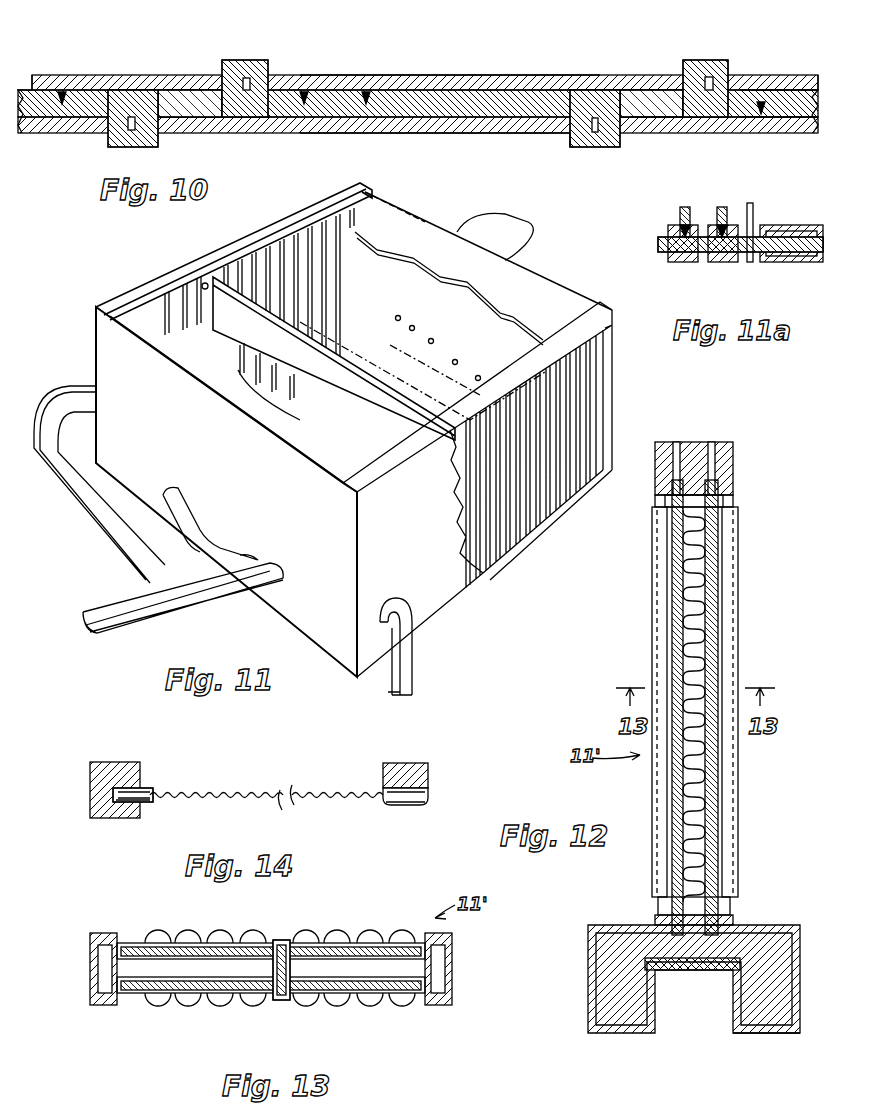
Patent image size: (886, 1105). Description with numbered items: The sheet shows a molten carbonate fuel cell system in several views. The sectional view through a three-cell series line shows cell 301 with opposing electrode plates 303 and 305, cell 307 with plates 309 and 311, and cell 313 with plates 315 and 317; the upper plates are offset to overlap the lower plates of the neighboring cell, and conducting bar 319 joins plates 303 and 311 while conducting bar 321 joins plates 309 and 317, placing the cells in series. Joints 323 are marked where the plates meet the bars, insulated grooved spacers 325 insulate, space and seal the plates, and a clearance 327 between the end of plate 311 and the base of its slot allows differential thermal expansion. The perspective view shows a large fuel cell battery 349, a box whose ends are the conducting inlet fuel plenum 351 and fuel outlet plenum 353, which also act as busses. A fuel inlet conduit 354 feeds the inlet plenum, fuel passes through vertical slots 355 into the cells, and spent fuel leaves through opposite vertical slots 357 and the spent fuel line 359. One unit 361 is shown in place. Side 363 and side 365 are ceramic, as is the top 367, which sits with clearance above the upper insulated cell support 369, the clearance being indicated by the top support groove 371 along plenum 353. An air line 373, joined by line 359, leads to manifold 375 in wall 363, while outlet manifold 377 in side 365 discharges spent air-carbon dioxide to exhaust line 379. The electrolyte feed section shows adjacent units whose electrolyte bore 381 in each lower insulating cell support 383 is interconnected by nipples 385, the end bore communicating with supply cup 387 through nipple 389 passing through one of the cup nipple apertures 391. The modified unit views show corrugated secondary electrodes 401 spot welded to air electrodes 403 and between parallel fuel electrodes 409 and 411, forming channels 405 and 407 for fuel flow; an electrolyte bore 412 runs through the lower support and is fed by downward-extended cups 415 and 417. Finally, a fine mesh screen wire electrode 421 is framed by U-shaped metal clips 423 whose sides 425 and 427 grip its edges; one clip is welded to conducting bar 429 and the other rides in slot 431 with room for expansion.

In FIG. 10, the cell 301 is at (66, 80).
In FIG. 10, the electrode plate 303 is at (108, 82).
In FIG. 10, the electrode plate 305 is at (48, 134).
In FIG. 10, the cell 307 is at (370, 96).
In FIG. 10, the electrode plate 309 is at (444, 76).
In FIG. 10, the electrode plate 311 is at (346, 134).
In FIG. 10, the cell 313 is at (758, 134).
In FIG. 10, the electrode plate 315 is at (768, 80).
In FIG. 10, the electrode plate 317 is at (670, 134).
In FIG. 10, the conducting bar 319 is at (181, 98).
In FIG. 10, the conducting bar 321 is at (640, 100).
In FIG. 10, the adhesive joints 323 is at (58, 92).
In FIG. 10, the insulated grooved spacer 325 is at (232, 70).
In FIG. 10, the clearance 327 is at (572, 148).
In FIG. 11, the fuel cell battery 349 is at (108, 296).
In FIG. 11, the inlet fuel plenum 351 is at (448, 578).
In FIG. 11, the fuel outlet plenum 353 is at (272, 252).
In FIG. 11, the fuel inlet conduit 354 is at (405, 664).
In FIG. 11, the vertical slots 355 is at (580, 404).
In FIG. 11, the vertical slots 357 is at (318, 288).
In FIG. 11, the spent fuel line 359 is at (48, 430).
In FIG. 11, the unit 361 is at (204, 283).
In FIG. 11, the side 363 is at (115, 350).
In FIG. 11, the side 365 is at (422, 363).
In FIG. 11A, the side 365 is at (756, 216).
In FIG. 11, the top 367 is at (400, 215).
In FIG. 11, the upper insulated cell support 369 is at (226, 280).
In FIG. 11, the top support groove 371 is at (178, 292).
In FIG. 11, the air line 373 is at (120, 600).
In FIG. 11, the manifold 375 is at (245, 572).
In FIG. 11, the outlet manifold 377 is at (518, 258).
In FIG. 11, the exhaust line 379 is at (500, 230).
In FIG. 11A, the electrolyte bore 381 is at (688, 264).
In FIG. 11A, the lower insulating cell support 383 is at (677, 226).
In FIG. 11A, the nipple 385 is at (688, 225).
In FIG. 11A, the supply cup 387 is at (795, 262).
In FIG. 11A, the nipple 389 is at (758, 262).
In FIG. 11, the cup nipple apertures 391 is at (428, 338).
In FIG. 12, the secondary electrodes 401 is at (660, 578).
In FIG. 13, the secondary electrodes 401 is at (226, 932).
In FIG. 13, the air electrodes 403 is at (160, 932).
In FIG. 13, the rail chamber 405 is at (271, 961).
In FIG. 12, the serpentine element 407 is at (700, 642).
In FIG. 13, the serpentine element 407 is at (271, 976).
In FIG. 13, the fuel electrode 409 is at (133, 945).
In FIG. 12, the fuel electrode 411 is at (680, 626).
In FIG. 13, the fuel electrode 411 is at (290, 942).
In FIG. 12, the electrolyte bore 412 is at (696, 966).
In FIG. 12, the cup 415 is at (590, 965).
In FIG. 12, the cup 417 is at (758, 1034).
In FIG. 14, the fine mesh screen wire electrode 421 is at (236, 780).
In FIG. 14, the metal clip 423 is at (117, 800).
In FIG. 14, the side 425 is at (138, 790).
In FIG. 14, the side 427 is at (145, 802).
In FIG. 14, the conducting bar 429 is at (410, 770).
In FIG. 14, the slot 431 is at (110, 795).